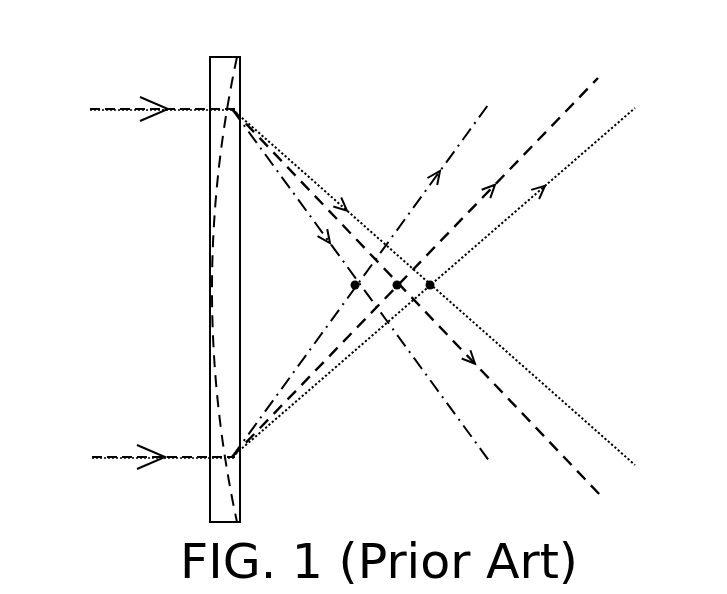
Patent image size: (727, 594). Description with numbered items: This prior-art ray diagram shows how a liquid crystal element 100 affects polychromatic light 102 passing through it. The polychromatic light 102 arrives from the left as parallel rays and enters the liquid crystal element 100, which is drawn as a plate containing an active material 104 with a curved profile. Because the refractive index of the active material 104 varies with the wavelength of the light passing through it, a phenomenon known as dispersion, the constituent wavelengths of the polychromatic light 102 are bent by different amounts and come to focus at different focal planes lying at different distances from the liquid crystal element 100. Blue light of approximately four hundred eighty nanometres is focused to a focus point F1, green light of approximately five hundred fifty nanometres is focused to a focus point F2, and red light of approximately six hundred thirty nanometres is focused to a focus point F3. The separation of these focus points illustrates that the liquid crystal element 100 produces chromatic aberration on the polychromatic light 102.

The liquid crystal element 100 is at (243, 268).
The polychromatic light 102 is at (102, 102).
The active material 104 is at (187, 279).
The focus point F1 is at (361, 283).
The focus point F2 is at (417, 288).
The focus point F3 is at (433, 286).